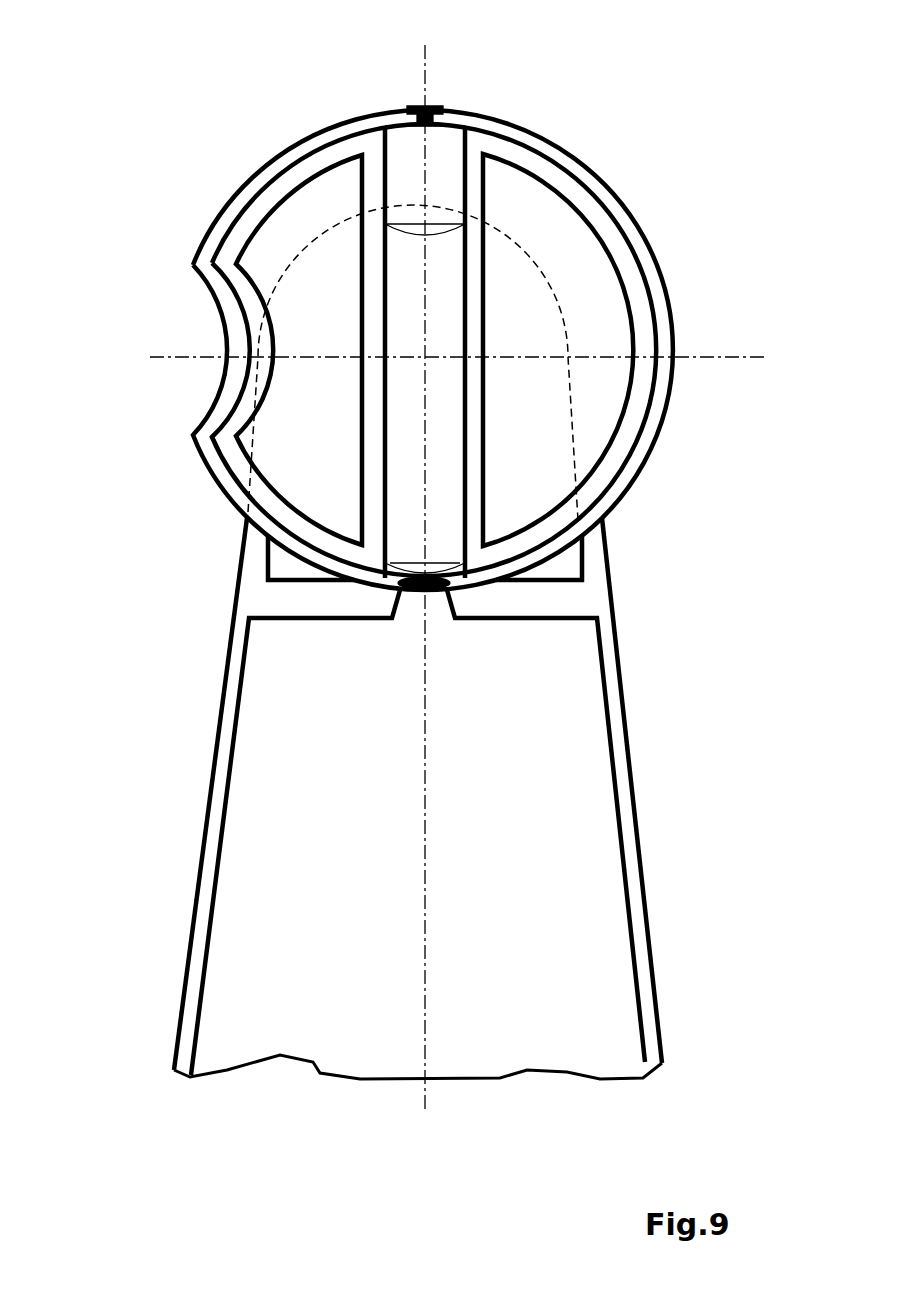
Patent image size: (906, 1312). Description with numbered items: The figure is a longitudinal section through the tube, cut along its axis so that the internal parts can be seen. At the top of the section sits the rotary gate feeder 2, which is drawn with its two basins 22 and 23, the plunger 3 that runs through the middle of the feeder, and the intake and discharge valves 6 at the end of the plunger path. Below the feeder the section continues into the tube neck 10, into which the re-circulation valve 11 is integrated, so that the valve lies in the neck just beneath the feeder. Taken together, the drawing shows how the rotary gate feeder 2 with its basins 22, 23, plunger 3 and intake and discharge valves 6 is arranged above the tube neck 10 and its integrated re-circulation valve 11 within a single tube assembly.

The rotary gate feeder 2 is at (215, 222).
The basin 22 is at (623, 197).
The basin 23 is at (362, 142).
The plunger 3 is at (427, 160).
The intake and discharge valve 6 is at (417, 105).
The tube neck 10 is at (580, 590).
The re-circulation valve 11 is at (427, 607).